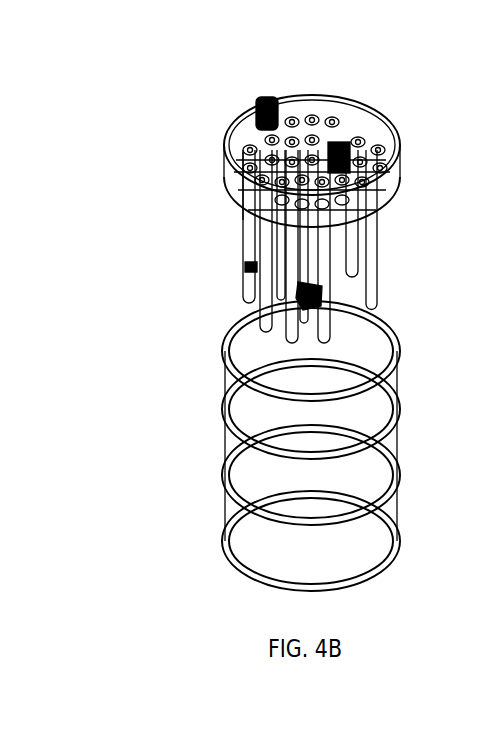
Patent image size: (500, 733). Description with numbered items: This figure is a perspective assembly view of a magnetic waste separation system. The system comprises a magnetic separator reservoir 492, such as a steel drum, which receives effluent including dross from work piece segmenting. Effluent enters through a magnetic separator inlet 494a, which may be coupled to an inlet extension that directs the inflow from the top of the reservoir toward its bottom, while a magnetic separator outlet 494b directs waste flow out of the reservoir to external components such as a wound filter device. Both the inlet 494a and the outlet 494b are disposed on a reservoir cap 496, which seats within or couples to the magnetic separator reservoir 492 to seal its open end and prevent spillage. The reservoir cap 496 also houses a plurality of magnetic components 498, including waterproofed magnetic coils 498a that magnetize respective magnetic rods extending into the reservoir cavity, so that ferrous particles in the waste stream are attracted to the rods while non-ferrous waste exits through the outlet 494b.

The magnetic separator reservoir 492 is at (222, 448).
The magnetic components 498 is at (245, 270).
The magnetic coils 498a is at (232, 146).
The reservoir cap 496 is at (388, 191).
The magnetic separator inlet 494a is at (268, 96).
The magnetic separator outlet 494b is at (346, 140).